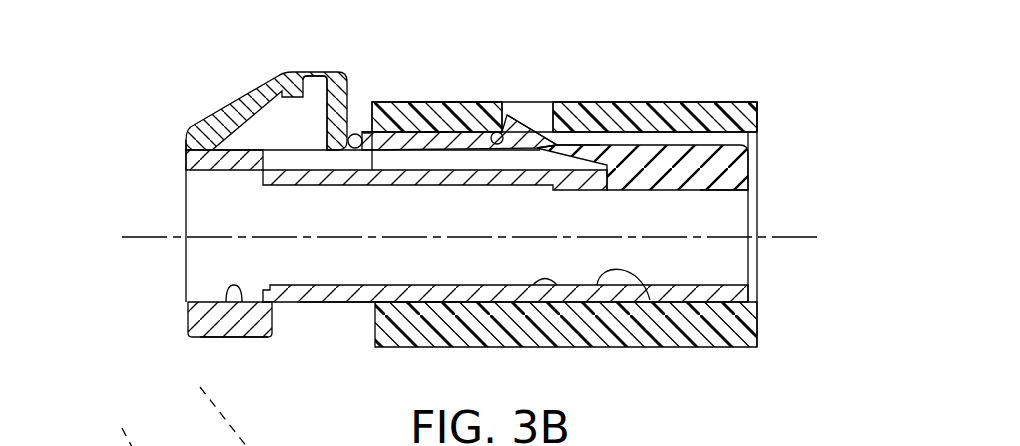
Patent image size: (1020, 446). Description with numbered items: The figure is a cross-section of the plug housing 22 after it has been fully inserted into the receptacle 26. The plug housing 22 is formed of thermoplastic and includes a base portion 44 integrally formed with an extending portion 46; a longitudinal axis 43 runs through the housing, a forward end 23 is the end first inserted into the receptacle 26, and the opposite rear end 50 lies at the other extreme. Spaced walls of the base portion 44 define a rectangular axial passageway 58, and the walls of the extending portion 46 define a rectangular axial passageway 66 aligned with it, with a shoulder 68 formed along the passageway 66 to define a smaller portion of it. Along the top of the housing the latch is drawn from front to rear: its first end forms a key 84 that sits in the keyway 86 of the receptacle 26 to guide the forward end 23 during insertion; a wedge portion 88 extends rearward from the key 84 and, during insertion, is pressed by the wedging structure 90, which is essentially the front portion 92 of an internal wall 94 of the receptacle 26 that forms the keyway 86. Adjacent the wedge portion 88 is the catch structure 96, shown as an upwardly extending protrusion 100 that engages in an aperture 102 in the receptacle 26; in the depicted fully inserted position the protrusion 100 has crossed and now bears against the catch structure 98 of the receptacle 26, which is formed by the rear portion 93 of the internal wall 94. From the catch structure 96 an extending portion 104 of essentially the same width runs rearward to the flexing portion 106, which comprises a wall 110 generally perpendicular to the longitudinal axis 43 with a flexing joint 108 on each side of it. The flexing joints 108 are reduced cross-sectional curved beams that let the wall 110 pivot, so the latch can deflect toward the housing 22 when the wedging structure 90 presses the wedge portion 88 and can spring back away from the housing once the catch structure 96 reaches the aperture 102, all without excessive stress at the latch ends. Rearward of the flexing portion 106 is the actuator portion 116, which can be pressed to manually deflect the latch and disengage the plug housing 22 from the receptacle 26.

The plug housing 22 is at (338, 315).
The forward end 23 is at (748, 190).
The receptacle 26 is at (757, 127).
The longitudinal axis 43 is at (153, 237).
The base portion 44 is at (257, 338).
The extending portion 46 is at (318, 302).
The rear end 50 is at (188, 322).
The rectangular axial passageway 58 is at (227, 302).
The rectangular axial passageway 66 is at (563, 300).
The shoulder 68 is at (625, 272).
The key 84 is at (669, 152).
The keyway 86 is at (757, 153).
The wedge portion 88 is at (590, 143).
The wedging structure 90 is at (364, 128).
The front portion 92 is at (355, 133).
The rear portion 93 is at (492, 132).
The internal wall 94 is at (462, 101).
The catch structure 96 is at (530, 124).
The catch structure 98 is at (538, 149).
The protrusion 100 is at (515, 126).
The aperture 102 is at (545, 130).
The extending portion 104 is at (415, 101).
The flexing portion 106 is at (318, 108).
The flexing joint 108 is at (305, 97).
The wall 110 is at (335, 123).
The actuator portion 116 is at (257, 78).